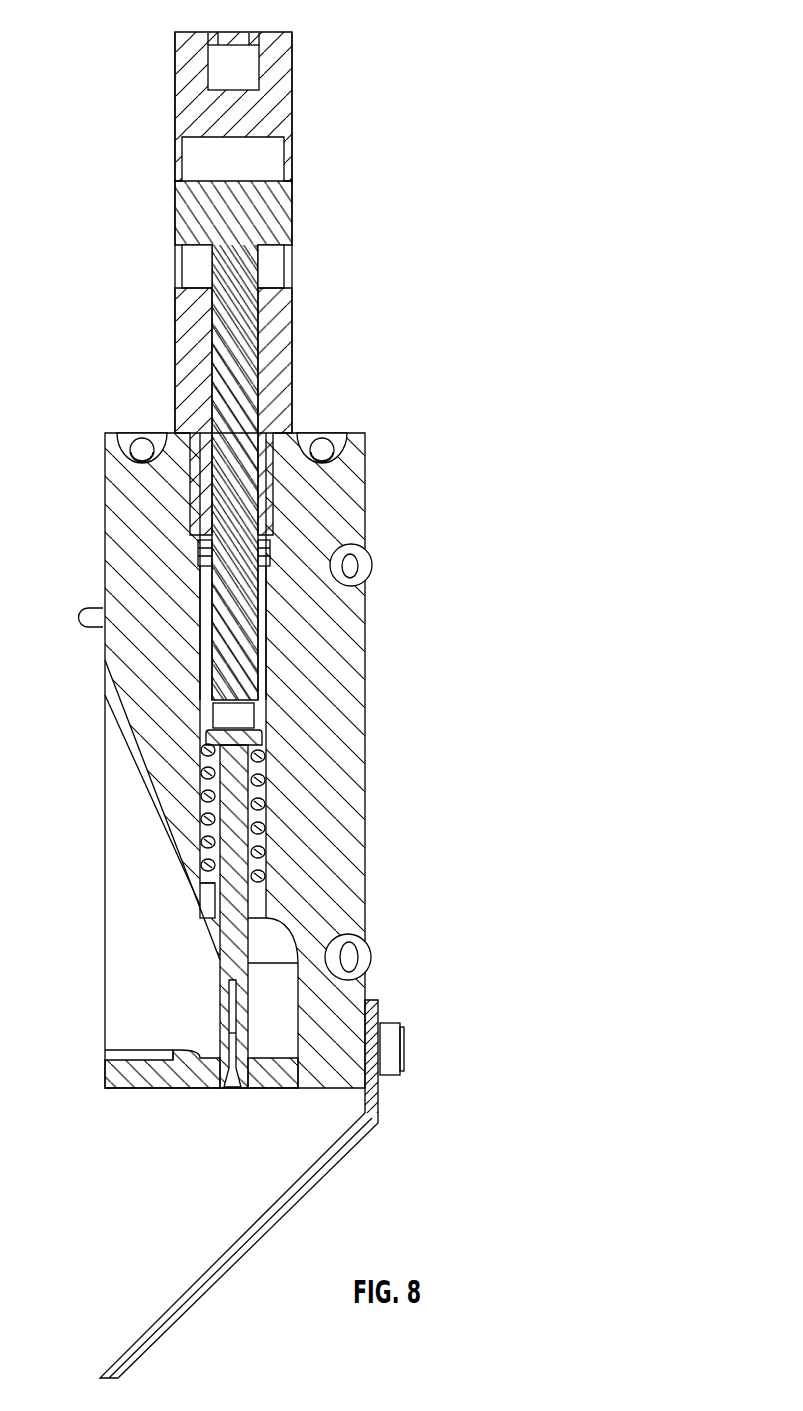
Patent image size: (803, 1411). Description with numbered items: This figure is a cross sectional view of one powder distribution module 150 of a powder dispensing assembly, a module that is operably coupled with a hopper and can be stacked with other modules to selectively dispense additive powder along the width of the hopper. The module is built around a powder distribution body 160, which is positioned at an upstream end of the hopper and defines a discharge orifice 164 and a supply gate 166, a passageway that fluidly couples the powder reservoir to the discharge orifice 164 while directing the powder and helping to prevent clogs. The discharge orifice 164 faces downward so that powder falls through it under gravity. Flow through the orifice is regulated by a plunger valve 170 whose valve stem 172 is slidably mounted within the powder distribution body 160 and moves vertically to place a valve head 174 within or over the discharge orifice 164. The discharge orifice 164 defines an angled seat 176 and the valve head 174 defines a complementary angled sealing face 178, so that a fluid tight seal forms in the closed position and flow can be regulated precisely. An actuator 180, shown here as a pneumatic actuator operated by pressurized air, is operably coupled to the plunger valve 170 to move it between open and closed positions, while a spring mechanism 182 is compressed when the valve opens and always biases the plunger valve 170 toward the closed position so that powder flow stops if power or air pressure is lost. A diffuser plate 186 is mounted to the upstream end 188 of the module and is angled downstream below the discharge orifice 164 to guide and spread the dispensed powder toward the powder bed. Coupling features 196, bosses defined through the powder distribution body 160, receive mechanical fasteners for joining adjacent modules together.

The powder distribution module 150 is at (508, 98).
The powder distribution body 160 is at (350, 742).
The discharge orifice 164 is at (156, 1088).
The supply gate 166 is at (143, 998).
The plunger valve 170 is at (233, 938).
The valve stem 172 is at (245, 895).
The valve head 174 is at (258, 1092).
The angled seat 176 is at (172, 1086).
The angled sealing face 178 is at (307, 1079).
The actuator 180 is at (245, 355).
The spring mechanism 182 is at (258, 805).
The diffuser plate 186 is at (330, 1168).
The upstream end 188 is at (372, 1010).
The coupling features 196 is at (356, 563).